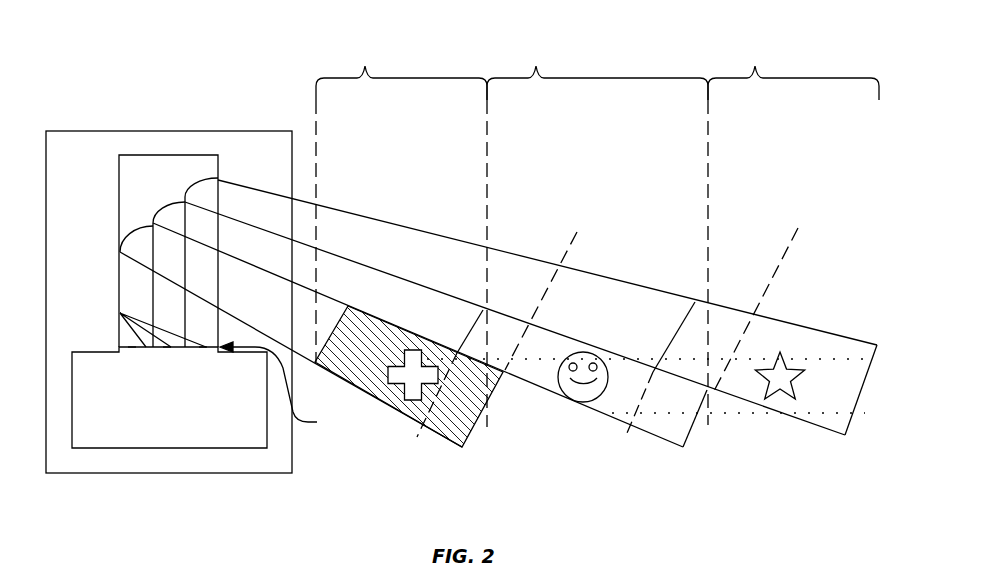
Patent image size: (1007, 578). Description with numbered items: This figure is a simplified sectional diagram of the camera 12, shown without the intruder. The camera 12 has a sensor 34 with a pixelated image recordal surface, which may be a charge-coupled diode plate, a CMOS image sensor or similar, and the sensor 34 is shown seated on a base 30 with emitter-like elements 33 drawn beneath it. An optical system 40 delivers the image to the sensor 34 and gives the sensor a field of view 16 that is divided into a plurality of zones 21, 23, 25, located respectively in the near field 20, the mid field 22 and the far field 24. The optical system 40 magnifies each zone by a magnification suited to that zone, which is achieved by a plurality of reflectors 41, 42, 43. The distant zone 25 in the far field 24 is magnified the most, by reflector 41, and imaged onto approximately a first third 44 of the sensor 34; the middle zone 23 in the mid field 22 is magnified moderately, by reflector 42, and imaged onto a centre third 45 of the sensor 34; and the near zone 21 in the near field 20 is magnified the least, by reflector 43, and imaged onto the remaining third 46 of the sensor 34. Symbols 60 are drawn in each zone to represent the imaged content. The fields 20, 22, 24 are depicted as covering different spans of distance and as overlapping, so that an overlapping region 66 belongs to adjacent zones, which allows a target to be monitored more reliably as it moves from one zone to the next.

The camera 12 is at (108, 131).
The optical system 40 is at (130, 155).
The reflector 41 is at (200, 178).
The reflector 42 is at (168, 205).
The reflector 43 is at (137, 228).
The light sources 33 is at (120, 313).
The sensor 34 is at (280, 387).
The base 30 is at (267, 435).
The first third of the sensor 44 is at (203, 347).
The centre third of the sensor 45 is at (167, 347).
The remaining third of the sensor 46 is at (132, 347).
The near field 20 is at (401, 182).
The mid field 22 is at (597, 215).
The far field 24 is at (793, 214).
The zone 21 is at (466, 440).
The zone 23 is at (683, 447).
The zone 25 is at (790, 330).
The field of view 16 is at (484, 408).
The symbol 60 is at (413, 400).
The overlapping region 66 is at (435, 437).